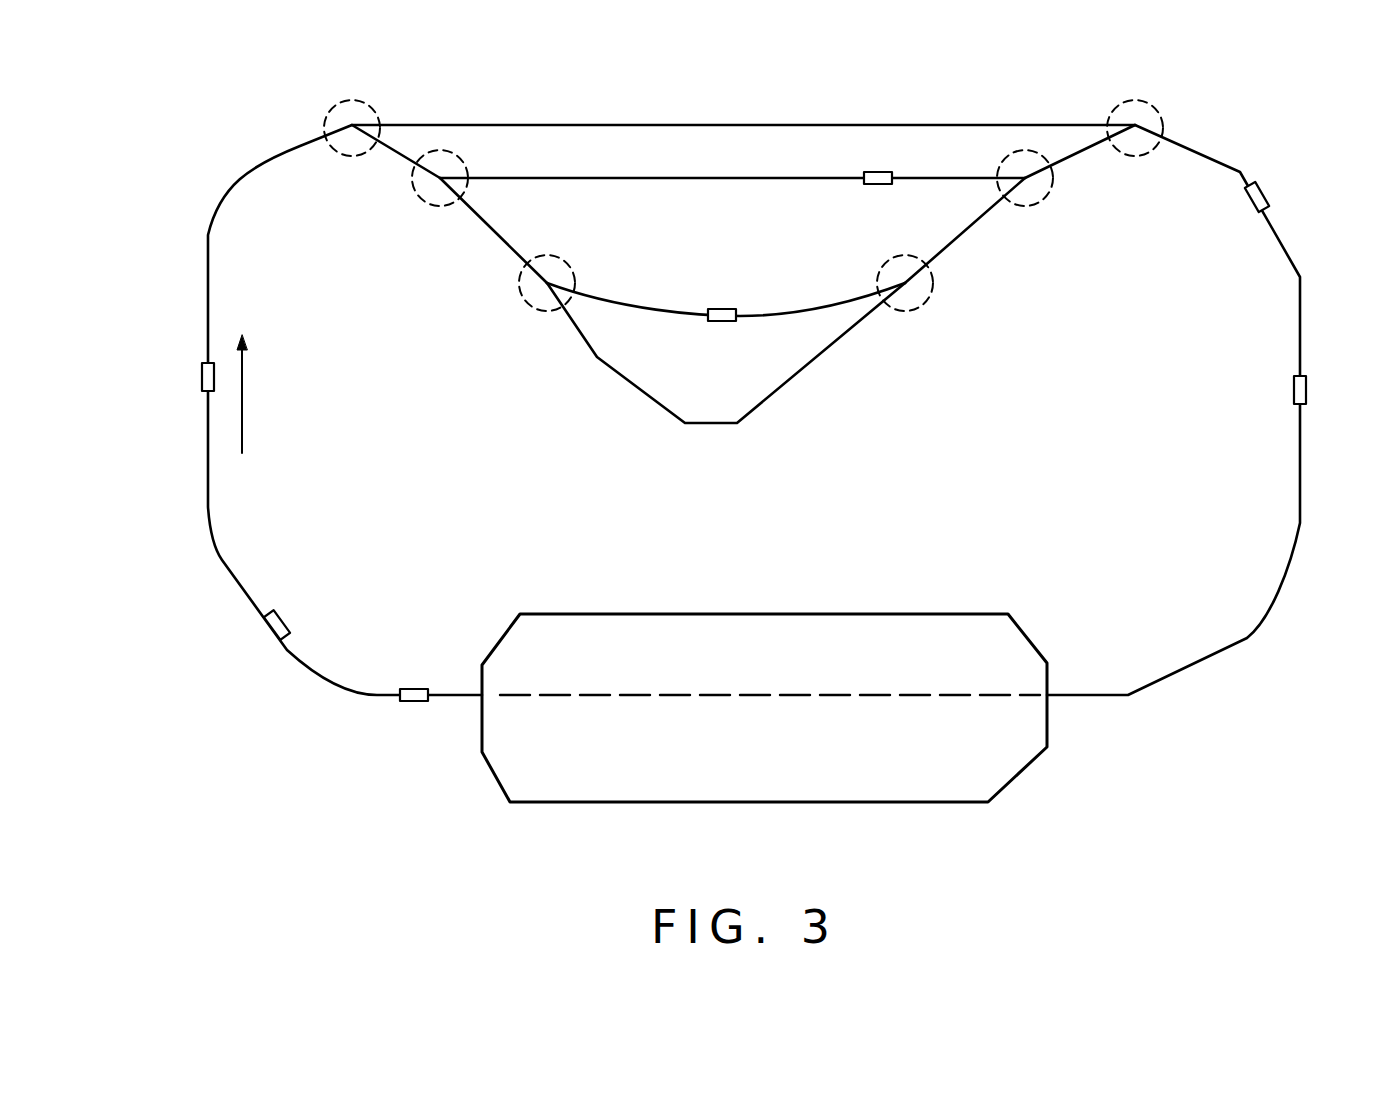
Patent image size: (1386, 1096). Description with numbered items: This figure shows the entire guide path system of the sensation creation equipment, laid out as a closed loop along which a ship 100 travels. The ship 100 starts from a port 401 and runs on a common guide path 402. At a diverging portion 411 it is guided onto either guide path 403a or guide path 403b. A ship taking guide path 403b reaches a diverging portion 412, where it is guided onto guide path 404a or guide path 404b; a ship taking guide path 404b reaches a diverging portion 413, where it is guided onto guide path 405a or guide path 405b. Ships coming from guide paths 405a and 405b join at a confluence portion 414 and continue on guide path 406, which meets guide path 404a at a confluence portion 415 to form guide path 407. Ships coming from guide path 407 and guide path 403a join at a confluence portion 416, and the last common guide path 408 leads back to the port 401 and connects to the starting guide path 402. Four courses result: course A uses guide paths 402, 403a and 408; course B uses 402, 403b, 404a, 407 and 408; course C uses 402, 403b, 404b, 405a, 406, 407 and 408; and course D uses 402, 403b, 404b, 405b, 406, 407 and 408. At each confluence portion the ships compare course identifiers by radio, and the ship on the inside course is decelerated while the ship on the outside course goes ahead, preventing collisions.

The ship 100 is at (722, 308).
The port 401 is at (746, 614).
The common guide path 402 is at (232, 557).
The guide path 403a is at (420, 124).
The guide path 403b is at (395, 152).
The guide path 404a is at (525, 178).
The guide path 404b is at (482, 235).
The guide path 405a is at (620, 297).
The guide path 405b is at (592, 358).
The guide path 406 is at (968, 232).
The guide path 407 is at (1088, 152).
The guide path 408 is at (1298, 332).
The diverging portion 411 is at (352, 100).
The diverging portion 412 is at (425, 200).
The diverging portion 413 is at (527, 305).
The confluence portion 414 is at (932, 300).
The confluence portion 415 is at (1048, 196).
The confluence portion 416 is at (1150, 148).